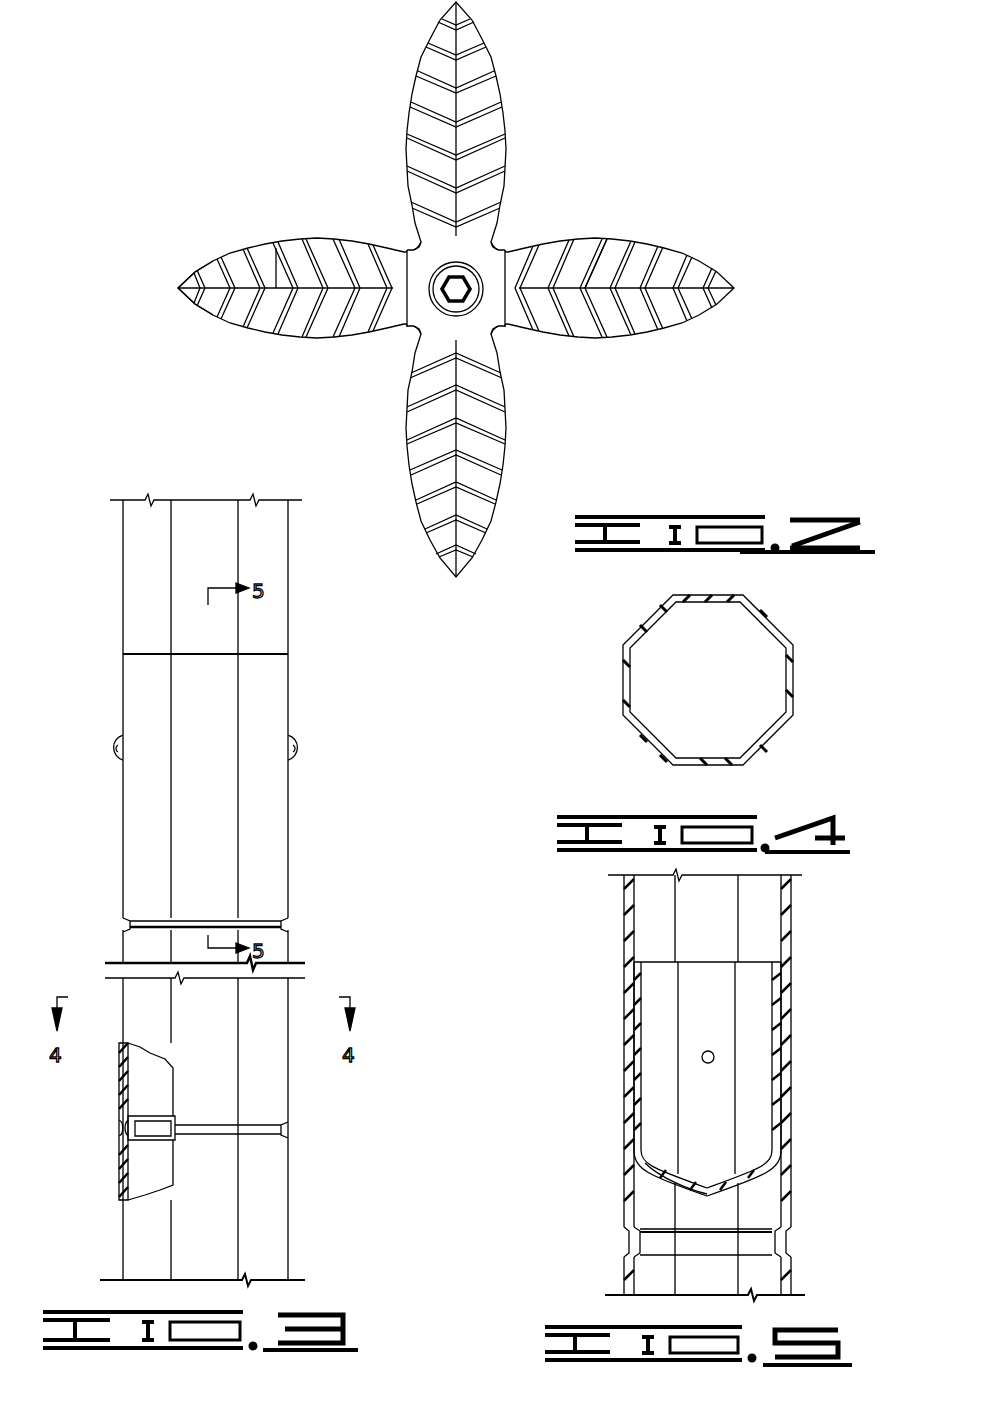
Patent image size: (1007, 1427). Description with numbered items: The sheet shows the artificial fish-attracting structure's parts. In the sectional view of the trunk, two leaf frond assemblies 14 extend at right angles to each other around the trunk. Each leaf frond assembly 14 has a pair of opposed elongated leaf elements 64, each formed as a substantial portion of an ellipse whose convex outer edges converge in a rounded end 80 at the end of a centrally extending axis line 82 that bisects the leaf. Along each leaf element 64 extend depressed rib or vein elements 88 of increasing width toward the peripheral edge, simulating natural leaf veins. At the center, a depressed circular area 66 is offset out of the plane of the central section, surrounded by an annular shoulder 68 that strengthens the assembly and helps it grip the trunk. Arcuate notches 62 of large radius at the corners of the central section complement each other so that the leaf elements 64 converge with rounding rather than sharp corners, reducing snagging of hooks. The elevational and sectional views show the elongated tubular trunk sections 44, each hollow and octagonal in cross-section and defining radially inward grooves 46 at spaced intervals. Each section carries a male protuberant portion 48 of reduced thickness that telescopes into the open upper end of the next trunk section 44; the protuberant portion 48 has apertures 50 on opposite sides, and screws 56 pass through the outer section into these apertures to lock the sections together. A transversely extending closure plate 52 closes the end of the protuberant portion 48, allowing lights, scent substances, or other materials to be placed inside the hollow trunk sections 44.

In FIG. 2, the leaf frond assembly 14 is at (520, 189).
In FIG. 2, the elongated tubular trunk section 44 is at (452, 276).
In FIG. 3, the elongated tubular trunk section 44 is at (270, 532).
In FIG. 4, the elongated tubular trunk section 44 is at (632, 678).
In FIG. 5, the elongated tubular trunk section 44 is at (790, 921).
In FIG. 3, the groove 46 is at (285, 922).
In FIG. 5, the groove 46 is at (792, 1244).
In FIG. 5, the male protuberant portion 48 is at (765, 1066).
In FIG. 5, the aperture 50 is at (704, 1064).
In FIG. 5, the closure plate 52 is at (645, 1179).
In FIG. 3, the screw 56 is at (120, 742).
In FIG. 2, the arcuate notch 62 is at (413, 245).
In FIG. 2, the leaf element 64 is at (488, 127).
In FIG. 2, the depressed circular area 66 is at (447, 304).
In FIG. 2, the annular shoulder 68 is at (484, 308).
In FIG. 2, the rounded end 80 is at (177, 287).
In FIG. 2, the axis line 82 is at (276, 248).
In FIG. 2, the rib or vein element 88 is at (622, 250).